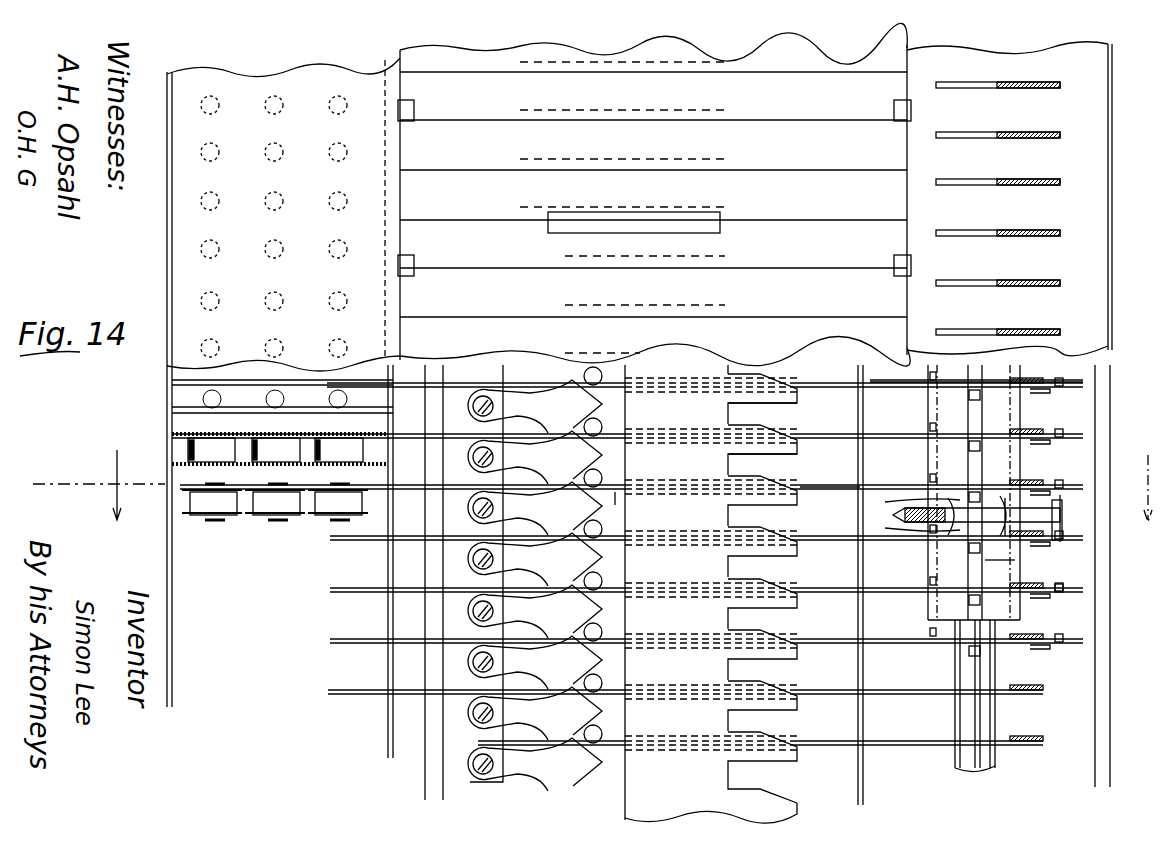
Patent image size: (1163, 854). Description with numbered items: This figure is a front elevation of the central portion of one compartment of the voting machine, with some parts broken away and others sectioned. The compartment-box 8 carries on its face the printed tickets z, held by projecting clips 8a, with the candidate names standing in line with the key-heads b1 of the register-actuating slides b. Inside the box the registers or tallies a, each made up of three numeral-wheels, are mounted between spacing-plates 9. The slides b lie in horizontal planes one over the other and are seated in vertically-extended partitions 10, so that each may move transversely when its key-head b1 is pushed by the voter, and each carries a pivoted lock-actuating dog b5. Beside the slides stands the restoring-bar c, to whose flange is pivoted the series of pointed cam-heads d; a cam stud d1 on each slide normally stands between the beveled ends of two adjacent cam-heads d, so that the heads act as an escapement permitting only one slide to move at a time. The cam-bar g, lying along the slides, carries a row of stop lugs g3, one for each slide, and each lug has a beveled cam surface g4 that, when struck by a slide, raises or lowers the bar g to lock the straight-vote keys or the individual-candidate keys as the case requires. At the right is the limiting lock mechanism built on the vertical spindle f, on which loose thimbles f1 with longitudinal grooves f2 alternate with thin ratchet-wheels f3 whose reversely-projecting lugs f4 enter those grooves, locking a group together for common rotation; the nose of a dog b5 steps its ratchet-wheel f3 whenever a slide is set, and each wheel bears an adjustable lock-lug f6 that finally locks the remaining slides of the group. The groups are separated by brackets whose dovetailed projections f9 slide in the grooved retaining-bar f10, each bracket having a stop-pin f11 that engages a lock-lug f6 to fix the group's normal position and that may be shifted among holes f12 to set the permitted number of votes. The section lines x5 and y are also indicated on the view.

The compartment-box 8 is at (1112, 143).
The projecting clips 8a is at (930, 205).
The printed tickets z is at (583, 72).
The finger-piece or key-head b1 is at (1030, 133).
The spacing-plates 9 is at (181, 462).
The registers or tallies a is at (335, 517).
The vertically-extended partitions 10 is at (386, 558).
The section line x5 is at (99, 487).
The section line y is at (1153, 504).
The register-actuating slides b is at (328, 692).
The restoring-bar c is at (428, 745).
The cam-heads d is at (565, 715).
The cam stud or projection d1 is at (600, 640).
The cam-bar g is at (711, 594).
The stop lugs or projections g3 is at (757, 442).
The beveled or cam surface g4 is at (770, 690).
The lock-actuating dog b5 is at (816, 497).
The vertical shaft or spindle f is at (980, 725).
The loose thimbles f1 is at (1000, 572).
The longitudinal grooves f2 is at (972, 562).
The ratchet-wheels f3 is at (904, 670).
The reversely-projecting lugs f4 is at (1050, 618).
The circumferentially-adjustable lock-lug f6 is at (1063, 588).
The dovetailed projections f9 is at (961, 516).
The retaining-bar f10 is at (1100, 390).
The stop-pin f11 is at (1062, 527).
The holes f12 is at (1078, 515).